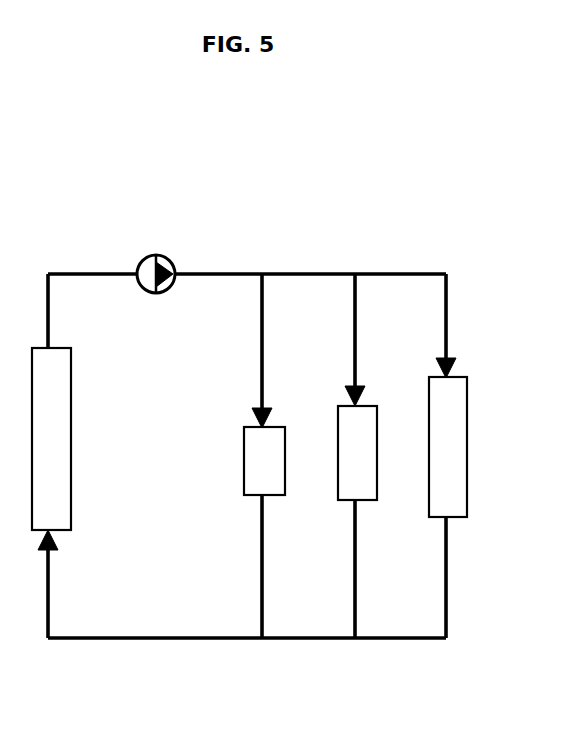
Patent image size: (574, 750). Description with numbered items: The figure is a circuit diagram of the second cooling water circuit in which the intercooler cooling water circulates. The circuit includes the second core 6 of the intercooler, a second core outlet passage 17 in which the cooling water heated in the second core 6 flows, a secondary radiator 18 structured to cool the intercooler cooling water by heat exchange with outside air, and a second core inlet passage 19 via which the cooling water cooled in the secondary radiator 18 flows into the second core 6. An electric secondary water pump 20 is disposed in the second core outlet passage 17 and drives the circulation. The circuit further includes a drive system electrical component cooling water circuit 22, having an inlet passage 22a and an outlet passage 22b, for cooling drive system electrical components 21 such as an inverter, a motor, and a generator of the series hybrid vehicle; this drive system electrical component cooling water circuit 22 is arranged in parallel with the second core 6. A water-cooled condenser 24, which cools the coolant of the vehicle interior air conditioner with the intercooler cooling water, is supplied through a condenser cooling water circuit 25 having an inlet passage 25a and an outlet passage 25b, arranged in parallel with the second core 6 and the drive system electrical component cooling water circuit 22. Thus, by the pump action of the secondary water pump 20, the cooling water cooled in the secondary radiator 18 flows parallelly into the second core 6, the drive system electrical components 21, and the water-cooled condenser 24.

The second core 6 is at (468, 508).
The second core outlet passage 17 is at (378, 640).
The secondary radiator 18 is at (72, 438).
The second core inlet passage 19 is at (388, 272).
The secondary water pump 20 is at (167, 260).
The drive system electrical components 21 is at (244, 468).
The drive system electrical component cooling water circuit 22 is at (196, 456).
The inlet passage 22a is at (260, 346).
The outlet passage 22b is at (260, 570).
The water-cooled condenser 24 is at (377, 502).
The condenser cooling water circuit 25 is at (360, 456).
The inlet passage 25a is at (356, 342).
The outlet passage 25b is at (357, 573).